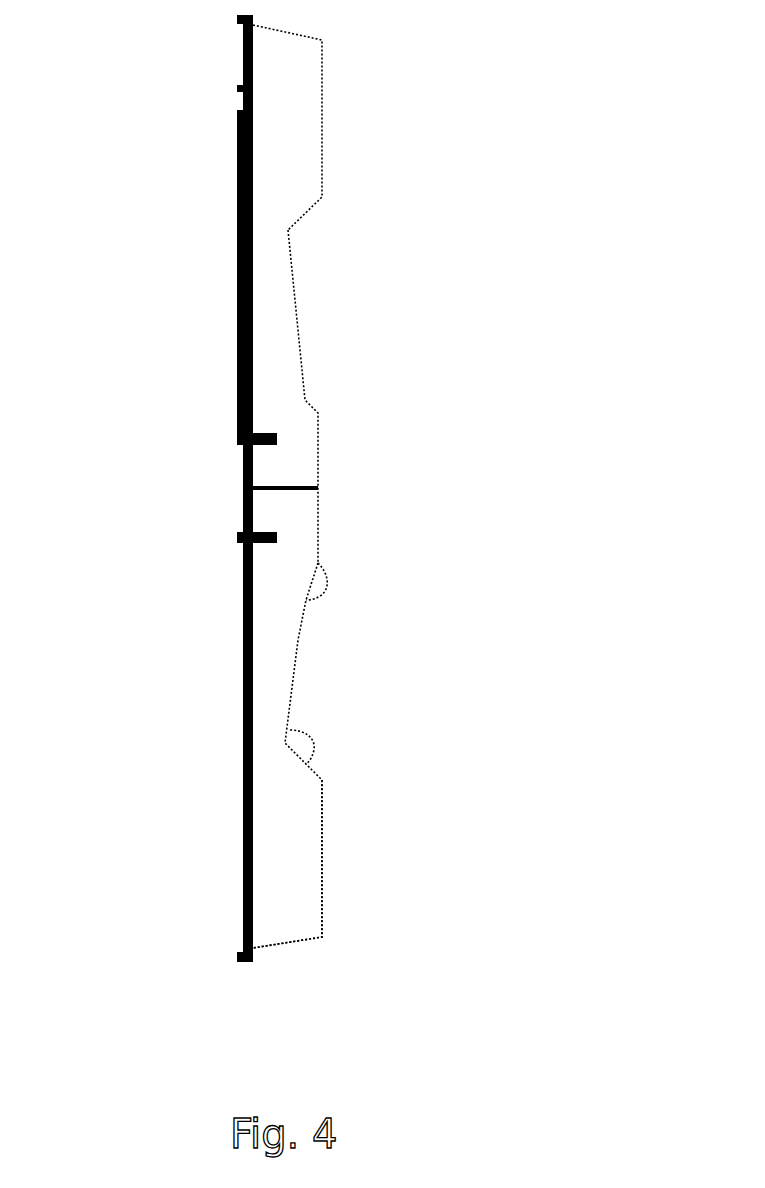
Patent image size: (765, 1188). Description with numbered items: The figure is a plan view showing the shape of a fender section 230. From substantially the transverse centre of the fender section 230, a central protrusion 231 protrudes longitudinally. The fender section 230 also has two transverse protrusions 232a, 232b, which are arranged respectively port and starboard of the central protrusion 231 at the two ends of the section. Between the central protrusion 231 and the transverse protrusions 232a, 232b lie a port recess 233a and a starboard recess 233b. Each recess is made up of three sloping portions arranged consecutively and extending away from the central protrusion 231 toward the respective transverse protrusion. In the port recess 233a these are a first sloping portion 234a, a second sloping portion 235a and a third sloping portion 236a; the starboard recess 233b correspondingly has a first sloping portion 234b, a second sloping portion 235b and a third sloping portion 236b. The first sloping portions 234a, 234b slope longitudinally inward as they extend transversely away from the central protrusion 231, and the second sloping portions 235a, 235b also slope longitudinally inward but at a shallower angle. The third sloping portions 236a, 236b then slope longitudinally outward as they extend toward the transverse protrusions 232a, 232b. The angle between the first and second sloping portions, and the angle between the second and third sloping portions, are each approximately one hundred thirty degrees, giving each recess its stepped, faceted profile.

The fender section 230 is at (447, 283).
The central protrusion 231 is at (300, 483).
The transverse protrusion 232a is at (305, 128).
The transverse protrusion 232b is at (283, 913).
The port recess 233a is at (344, 294).
The starboard recess 233b is at (349, 721).
The first sloping portion 234a is at (317, 415).
The first sloping portion 234b is at (318, 562).
The second sloping portion 235a is at (295, 300).
The second sloping portion 235b is at (297, 658).
The third sloping portion 236a is at (305, 212).
The third sloping portion 236b is at (312, 763).